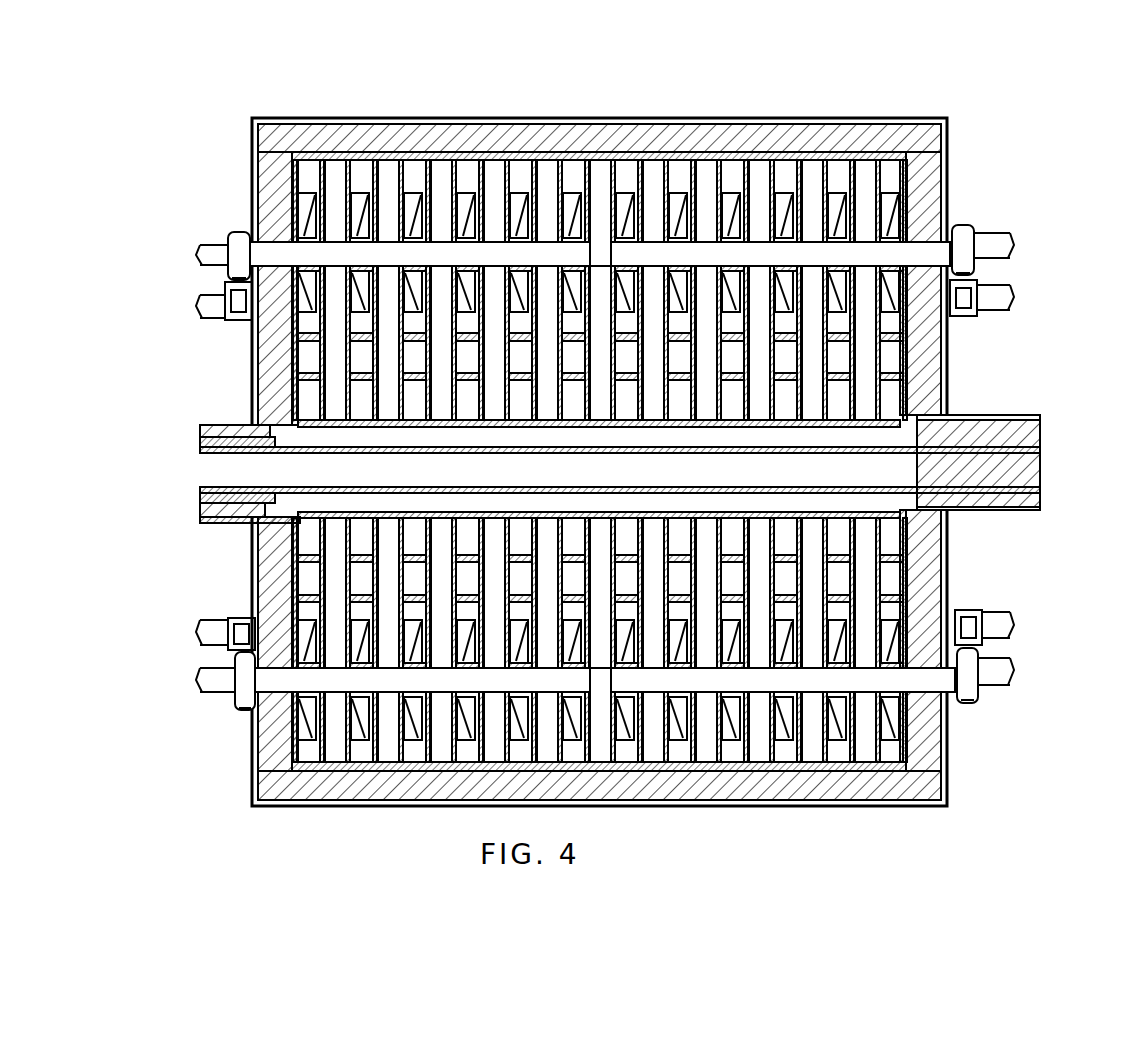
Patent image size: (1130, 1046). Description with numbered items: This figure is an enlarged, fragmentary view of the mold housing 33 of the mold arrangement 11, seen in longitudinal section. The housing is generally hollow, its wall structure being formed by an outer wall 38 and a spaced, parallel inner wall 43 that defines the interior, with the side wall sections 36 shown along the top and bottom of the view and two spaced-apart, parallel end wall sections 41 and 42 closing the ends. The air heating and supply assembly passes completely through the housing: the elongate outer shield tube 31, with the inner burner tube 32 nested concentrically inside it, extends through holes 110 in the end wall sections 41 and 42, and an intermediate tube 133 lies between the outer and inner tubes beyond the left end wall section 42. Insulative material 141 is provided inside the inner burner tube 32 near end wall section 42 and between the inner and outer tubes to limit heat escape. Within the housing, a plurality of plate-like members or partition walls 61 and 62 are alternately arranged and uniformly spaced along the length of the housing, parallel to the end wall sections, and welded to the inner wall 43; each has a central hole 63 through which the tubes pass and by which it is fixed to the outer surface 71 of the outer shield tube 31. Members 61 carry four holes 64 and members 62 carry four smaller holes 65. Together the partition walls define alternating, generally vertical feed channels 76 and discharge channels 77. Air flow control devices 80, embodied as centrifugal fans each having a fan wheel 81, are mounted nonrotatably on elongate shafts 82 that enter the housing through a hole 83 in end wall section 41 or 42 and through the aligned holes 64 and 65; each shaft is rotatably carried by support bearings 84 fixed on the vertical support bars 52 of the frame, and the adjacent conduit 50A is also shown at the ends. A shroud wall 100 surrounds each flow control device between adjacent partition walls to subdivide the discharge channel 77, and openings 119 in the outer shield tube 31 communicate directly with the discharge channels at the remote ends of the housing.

The mold arrangement 11 is at (978, 110).
The outer shield tube 31 is at (236, 520).
The inner burner tube 32 is at (258, 522).
The mold housing 33 is at (670, 110).
The side wall sections 36 is at (494, 118).
The outer wall 38 is at (926, 806).
The end wall section 41 is at (952, 352).
The end wall section 42 is at (262, 362).
The inner wall 43 is at (880, 775).
The fluid conduit 50A is at (206, 306).
The vertical support bar 52 is at (230, 318).
The plate-like member 61 is at (365, 192).
The plate-like member 62 is at (336, 196).
The central hole 63 is at (250, 470).
The holes 64 is at (712, 195).
The holes 65 is at (692, 740).
The outer surface 71 is at (1012, 420).
The feed channels 76 is at (392, 186).
The discharge channels 77 is at (290, 240).
The air flow control device 80 is at (916, 212).
The fan wheel 81 is at (302, 196).
The shaft 82 is at (206, 252).
The hole 83 is at (234, 240).
The support bearing 84 is at (230, 262).
The shroud wall 100 is at (312, 352).
The holes 110 is at (206, 432).
The openings 119 is at (318, 522).
The intermediate tube 133 is at (205, 500).
The insulative material 141 is at (912, 460).